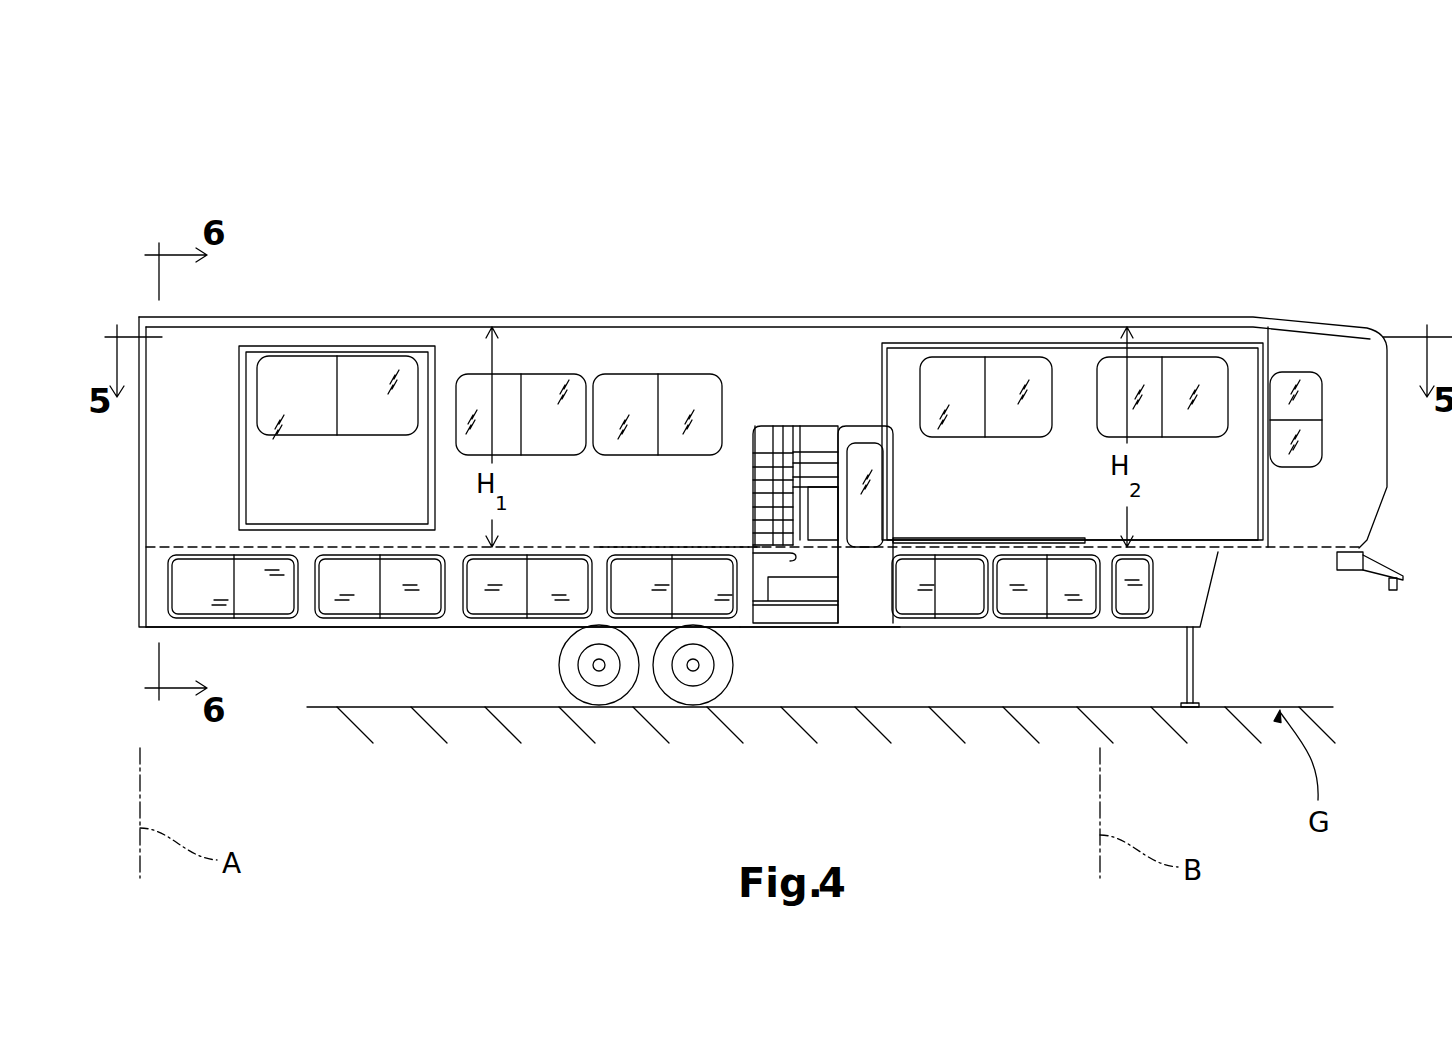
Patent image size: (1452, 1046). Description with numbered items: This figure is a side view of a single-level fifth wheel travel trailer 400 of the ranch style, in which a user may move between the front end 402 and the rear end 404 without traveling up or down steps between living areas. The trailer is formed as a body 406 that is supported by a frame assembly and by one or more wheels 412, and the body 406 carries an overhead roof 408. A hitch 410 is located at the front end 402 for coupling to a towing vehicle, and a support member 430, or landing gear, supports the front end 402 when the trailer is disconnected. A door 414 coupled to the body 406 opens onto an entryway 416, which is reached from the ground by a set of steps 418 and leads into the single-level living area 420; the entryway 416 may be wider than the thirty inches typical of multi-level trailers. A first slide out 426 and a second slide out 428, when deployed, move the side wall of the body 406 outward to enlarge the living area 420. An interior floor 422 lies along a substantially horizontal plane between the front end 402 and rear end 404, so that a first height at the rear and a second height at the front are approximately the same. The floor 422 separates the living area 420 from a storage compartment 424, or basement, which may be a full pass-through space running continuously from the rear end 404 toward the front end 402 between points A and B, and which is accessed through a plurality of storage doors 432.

The single-level fifth wheel travel trailer 400 is at (1147, 217).
The front end 402 is at (1397, 323).
The rear end 404 is at (138, 312).
The body 406 is at (1313, 350).
The overhead roof 408 is at (770, 317).
The hitch 410 is at (1393, 592).
The wheels 412 is at (599, 700).
The door 414 is at (866, 597).
The entryway 416 is at (827, 637).
The set of steps 418 is at (808, 592).
The single-level living area 420 is at (547, 363).
The interior floor 422 is at (595, 547).
The storage compartment 424 is at (130, 600).
The first slide out 426 is at (268, 473).
The second slide out 428 is at (1232, 510).
The support member 430 is at (1193, 688).
The storage doors 432 is at (262, 610).